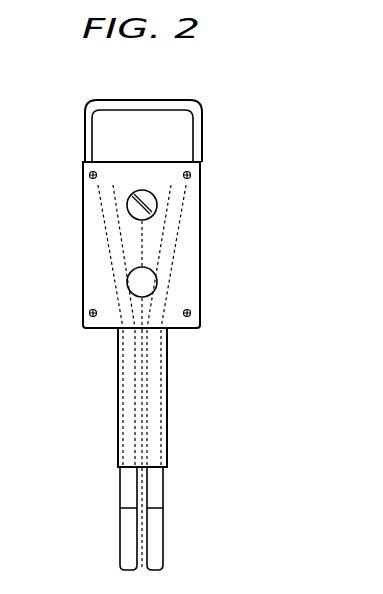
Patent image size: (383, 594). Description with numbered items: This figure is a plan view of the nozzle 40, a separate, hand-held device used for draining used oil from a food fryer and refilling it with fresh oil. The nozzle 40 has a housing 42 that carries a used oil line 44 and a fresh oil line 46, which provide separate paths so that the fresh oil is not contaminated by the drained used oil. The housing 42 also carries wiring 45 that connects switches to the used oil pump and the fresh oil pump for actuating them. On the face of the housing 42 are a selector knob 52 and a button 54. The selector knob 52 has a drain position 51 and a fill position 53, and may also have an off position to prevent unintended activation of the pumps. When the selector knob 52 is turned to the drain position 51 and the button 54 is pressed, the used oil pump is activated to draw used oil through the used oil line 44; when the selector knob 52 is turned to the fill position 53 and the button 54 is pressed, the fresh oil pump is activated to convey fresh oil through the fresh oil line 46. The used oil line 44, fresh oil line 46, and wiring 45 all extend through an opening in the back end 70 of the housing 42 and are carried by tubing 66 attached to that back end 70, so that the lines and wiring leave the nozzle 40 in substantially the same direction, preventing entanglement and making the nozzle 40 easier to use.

The nozzle 40 is at (228, 473).
The housing 42 is at (83, 290).
The used oil line 44 is at (155, 452).
The wiring 45 is at (142, 413).
The fresh oil line 46 is at (130, 427).
The drain position 51 is at (125, 169).
The selector knob 52 is at (150, 206).
The fill position 53 is at (179, 172).
The button 54 is at (148, 284).
The tubing 66 is at (118, 385).
The back end 70 is at (180, 335).